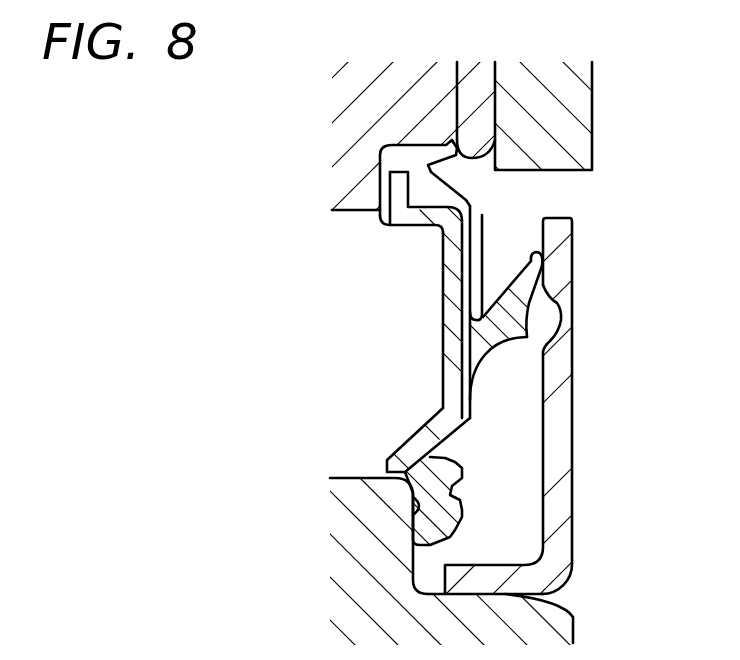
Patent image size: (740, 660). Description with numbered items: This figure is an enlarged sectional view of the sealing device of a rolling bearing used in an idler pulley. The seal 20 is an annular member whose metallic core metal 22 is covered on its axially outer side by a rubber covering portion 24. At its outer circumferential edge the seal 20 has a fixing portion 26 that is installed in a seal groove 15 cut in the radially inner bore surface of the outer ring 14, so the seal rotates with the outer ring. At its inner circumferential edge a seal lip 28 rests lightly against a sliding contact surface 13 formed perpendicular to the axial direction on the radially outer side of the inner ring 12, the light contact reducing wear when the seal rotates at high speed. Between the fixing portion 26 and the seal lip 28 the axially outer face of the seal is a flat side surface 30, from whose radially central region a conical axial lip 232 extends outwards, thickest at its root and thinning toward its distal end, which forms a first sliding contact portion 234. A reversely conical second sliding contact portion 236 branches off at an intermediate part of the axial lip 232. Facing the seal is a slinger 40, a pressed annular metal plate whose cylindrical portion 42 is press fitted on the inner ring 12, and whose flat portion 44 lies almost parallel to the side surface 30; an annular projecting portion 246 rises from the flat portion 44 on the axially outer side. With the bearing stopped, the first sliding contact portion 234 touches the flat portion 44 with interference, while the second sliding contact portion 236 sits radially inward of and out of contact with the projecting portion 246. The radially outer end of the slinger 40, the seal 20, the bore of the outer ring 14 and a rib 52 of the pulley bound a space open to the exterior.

The inner ring 12 is at (473, 644).
The sliding contact surface 13 is at (415, 573).
The outer ring 14 is at (406, 84).
The seal groove 15 is at (470, 96).
The seal 20 is at (467, 342).
The core metal 22 is at (450, 262).
The rubber covering portion 24 is at (462, 443).
The fixing portion 26 is at (413, 150).
The seal lip 28 is at (423, 537).
The side surface 30 is at (468, 285).
The slinger 40 is at (570, 391).
The cylindrical portion 42 is at (577, 617).
The flat portion 44 is at (542, 219).
The rib 52 is at (536, 72).
The axial lip 232 is at (482, 215).
The first sliding contact portion 234 is at (522, 267).
The second sliding contact portion 236 is at (518, 338).
The projecting portion 246 is at (553, 288).